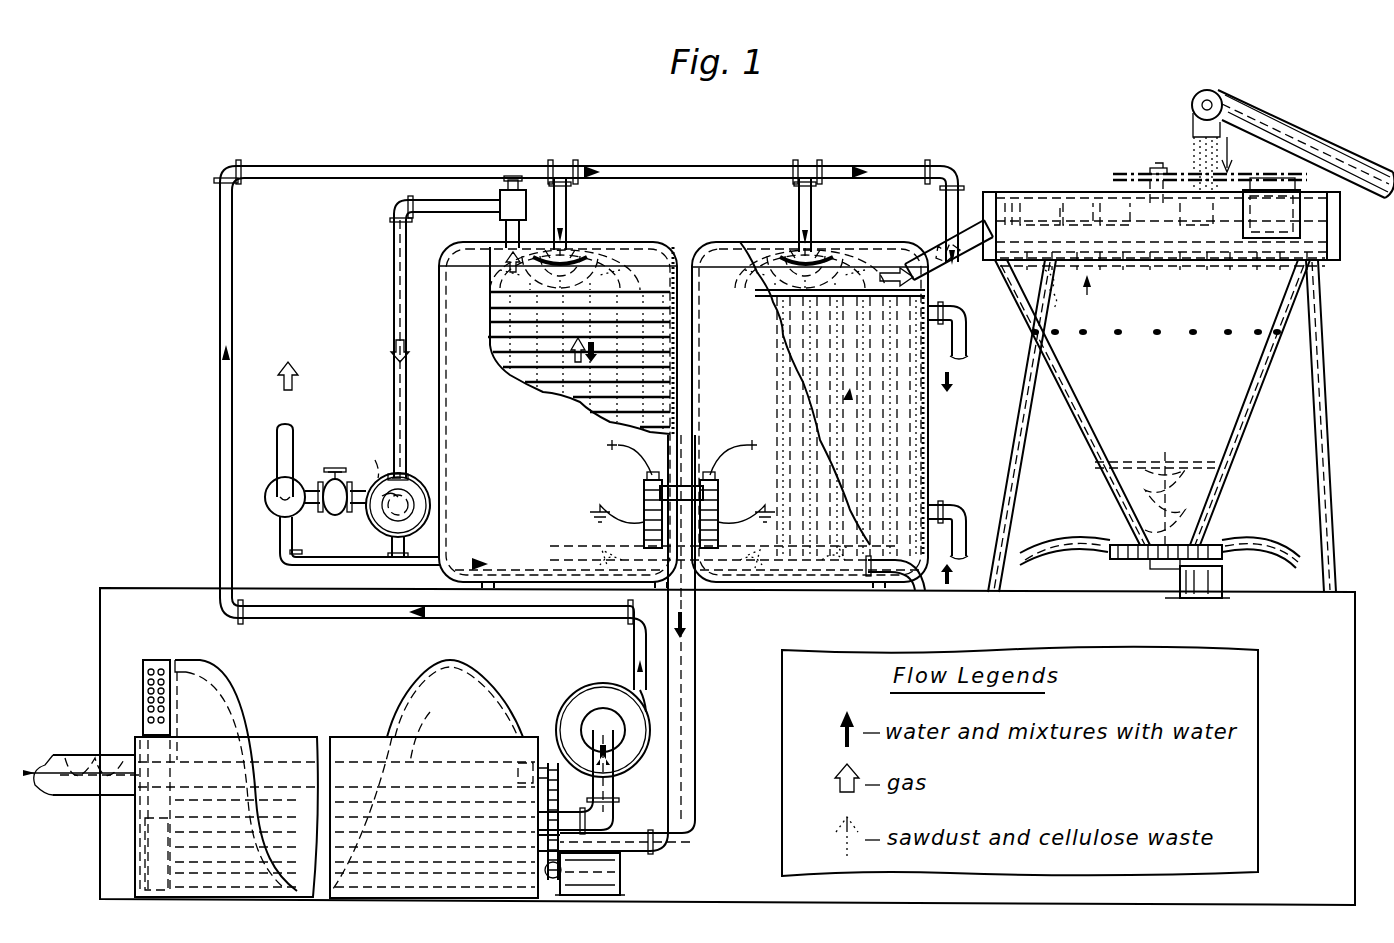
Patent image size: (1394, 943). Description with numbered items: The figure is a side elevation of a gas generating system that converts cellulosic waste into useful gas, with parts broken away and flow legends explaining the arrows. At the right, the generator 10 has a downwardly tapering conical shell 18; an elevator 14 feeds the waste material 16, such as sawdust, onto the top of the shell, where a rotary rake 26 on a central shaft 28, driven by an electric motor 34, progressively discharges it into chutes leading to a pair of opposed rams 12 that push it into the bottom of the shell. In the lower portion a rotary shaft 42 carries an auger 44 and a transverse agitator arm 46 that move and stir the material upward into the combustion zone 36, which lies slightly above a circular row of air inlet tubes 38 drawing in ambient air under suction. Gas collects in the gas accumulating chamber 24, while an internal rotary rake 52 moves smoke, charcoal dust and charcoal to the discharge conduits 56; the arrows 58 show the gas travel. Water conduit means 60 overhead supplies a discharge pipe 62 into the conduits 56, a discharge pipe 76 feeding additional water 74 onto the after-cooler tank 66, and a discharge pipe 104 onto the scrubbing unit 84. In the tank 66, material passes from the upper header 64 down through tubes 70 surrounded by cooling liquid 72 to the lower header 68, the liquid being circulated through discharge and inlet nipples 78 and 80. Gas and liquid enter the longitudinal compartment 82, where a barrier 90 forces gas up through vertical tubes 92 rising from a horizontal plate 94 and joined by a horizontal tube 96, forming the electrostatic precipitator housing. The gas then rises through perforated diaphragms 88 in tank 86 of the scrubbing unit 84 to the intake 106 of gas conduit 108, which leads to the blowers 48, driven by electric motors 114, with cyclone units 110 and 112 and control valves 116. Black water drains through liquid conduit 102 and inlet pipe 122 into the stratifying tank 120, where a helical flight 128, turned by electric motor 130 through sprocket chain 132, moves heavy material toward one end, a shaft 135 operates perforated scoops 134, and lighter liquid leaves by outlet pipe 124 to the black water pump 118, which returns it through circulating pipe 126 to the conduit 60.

The generator 10 is at (1312, 332).
The rams 12 is at (1067, 537).
The elevator 14 is at (1290, 127).
The waste material 16 is at (1193, 140).
The conical shell 18 is at (1262, 386).
The gas accumulating chamber 24 is at (1083, 275).
The rotary rake 26 is at (1053, 217).
The central shaft 28 is at (1160, 170).
The electric motor 34 is at (1257, 232).
The combustion zone 36 is at (1170, 305).
The air inlet tubes 38 is at (1193, 337).
The rotary shaft 42 is at (1167, 463).
The auger 44 is at (1213, 490).
The transverse agitator arm 46 is at (1133, 463).
The blowers 48 is at (431, 515).
The internal rotary rake 52 is at (1177, 253).
The discharge conduits 56 is at (940, 257).
The gas flow arrows 58 is at (510, 262).
The water conduit means 60 is at (838, 165).
The discharge pipe 62 is at (953, 197).
The upper header 64 is at (780, 247).
The after-cooler tank 66 is at (733, 240).
The lower header 68 is at (900, 577).
The tubes 70 is at (905, 423).
The cooling liquid 72 is at (920, 478).
The additional water 74 is at (873, 240).
The discharge pipe 76 is at (800, 197).
The discharge nipple 78 is at (952, 297).
The inlet nipple 80 is at (957, 497).
The longitudinal compartment 82 is at (563, 563).
The scrubbing unit 84 is at (590, 240).
The scrubbing tank 86 is at (448, 312).
The perforated diaphragms 88 is at (640, 257).
The barrier 90 is at (697, 593).
The vertical tubes 92 is at (643, 497).
The horizontal plate 94 is at (767, 547).
The horizontal tube 96 is at (680, 437).
The liquid conduit 102 is at (687, 740).
The discharge pipe 104 is at (567, 197).
The gas intake 106 is at (508, 190).
The gas conduit 108 is at (390, 257).
The dual cyclone unit 110 is at (377, 467).
The dual cyclone unit 112 is at (265, 497).
The electric motors 114 is at (410, 510).
The control valves 116 is at (337, 520).
The black water pump 118 is at (607, 687).
The stratifying tank 120 is at (360, 733).
The inlet pipe 122 is at (620, 800).
The outlet pipe 124 is at (563, 712).
The circulating pipe 126 is at (363, 617).
The helical flight 128 is at (236, 692).
The electric motor 130 is at (622, 888).
The sprocket chain 132 is at (543, 837).
The perforated scoops 134 is at (166, 663).
The shaft 135 is at (428, 716).